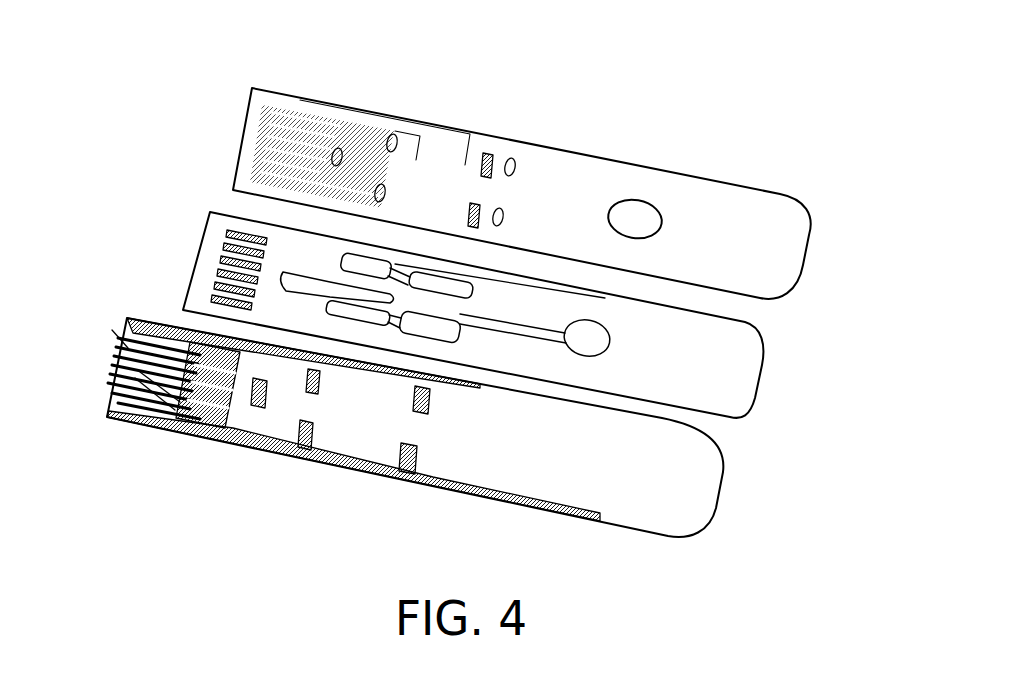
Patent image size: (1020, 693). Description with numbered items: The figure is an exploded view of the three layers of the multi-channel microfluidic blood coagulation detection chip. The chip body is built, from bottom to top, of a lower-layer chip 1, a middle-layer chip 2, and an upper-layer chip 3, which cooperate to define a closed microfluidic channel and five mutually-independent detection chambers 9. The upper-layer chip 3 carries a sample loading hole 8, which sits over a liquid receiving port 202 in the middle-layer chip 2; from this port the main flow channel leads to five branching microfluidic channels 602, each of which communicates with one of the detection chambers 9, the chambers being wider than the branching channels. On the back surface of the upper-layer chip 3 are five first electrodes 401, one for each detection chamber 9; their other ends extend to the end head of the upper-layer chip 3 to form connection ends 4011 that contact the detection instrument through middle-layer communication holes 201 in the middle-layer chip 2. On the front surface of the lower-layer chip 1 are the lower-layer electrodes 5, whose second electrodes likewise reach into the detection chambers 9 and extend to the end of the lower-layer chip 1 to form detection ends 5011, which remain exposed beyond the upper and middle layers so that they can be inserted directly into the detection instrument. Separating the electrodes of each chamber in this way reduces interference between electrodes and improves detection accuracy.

The lower-layer chip 1 is at (695, 495).
The middle-layer chip 2 is at (707, 387).
The upper-layer chip 3 is at (747, 243).
The lower-layer electrodes 5 is at (247, 387).
The detection ends 5011 is at (137, 327).
The sample loading hole 8 is at (642, 214).
The detection chambers 9 is at (302, 279).
The middle-layer communication holes 201 is at (222, 303).
The liquid receiving port 202 is at (593, 339).
The first electrodes 401 is at (417, 153).
The connection ends 4011 is at (297, 115).
The branching microfluidic channels 602 is at (368, 297).